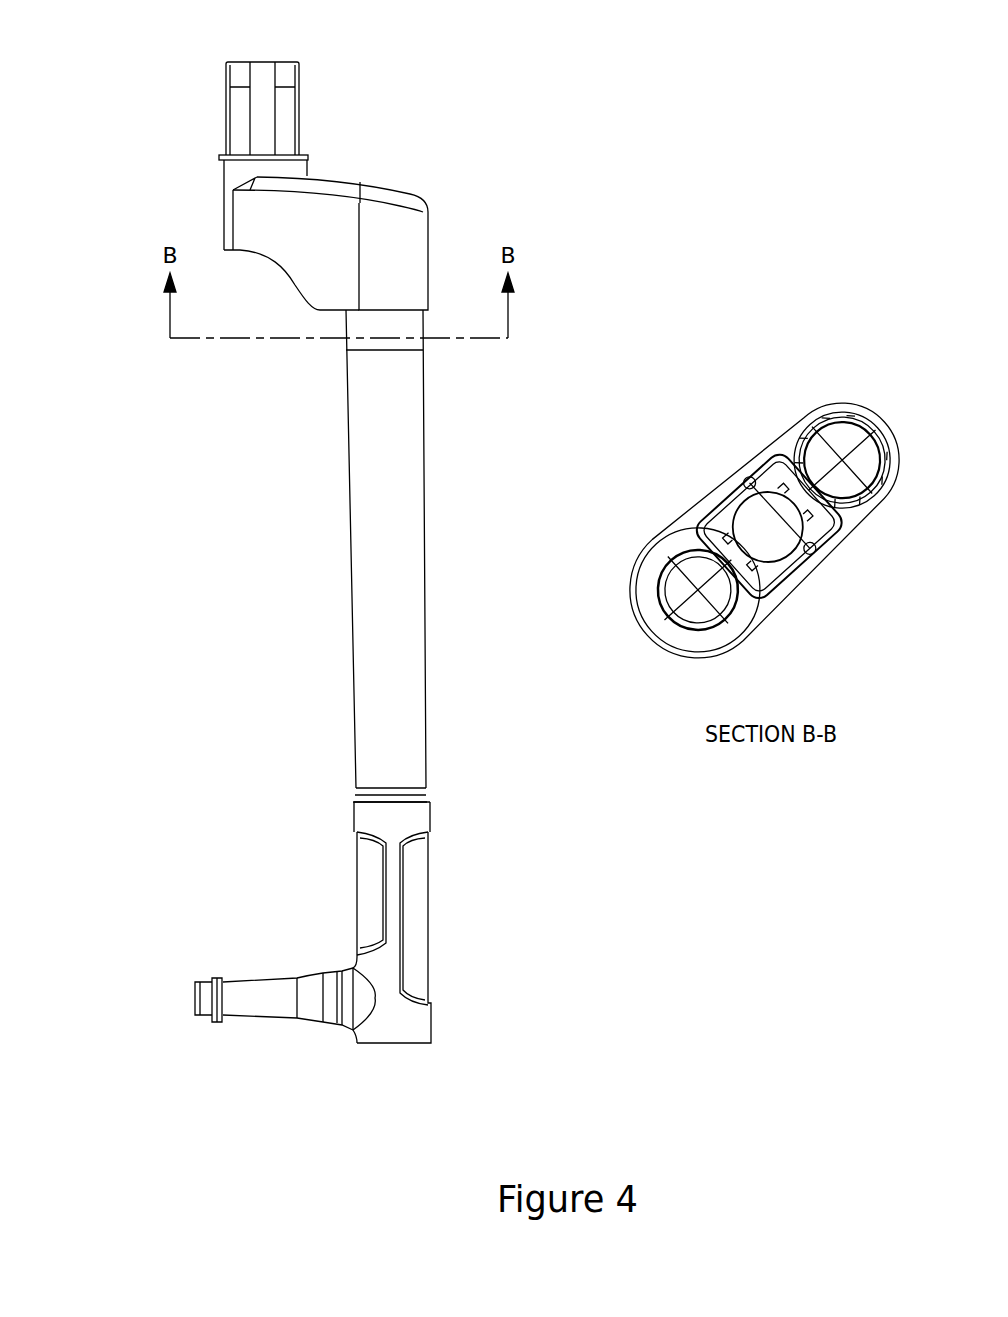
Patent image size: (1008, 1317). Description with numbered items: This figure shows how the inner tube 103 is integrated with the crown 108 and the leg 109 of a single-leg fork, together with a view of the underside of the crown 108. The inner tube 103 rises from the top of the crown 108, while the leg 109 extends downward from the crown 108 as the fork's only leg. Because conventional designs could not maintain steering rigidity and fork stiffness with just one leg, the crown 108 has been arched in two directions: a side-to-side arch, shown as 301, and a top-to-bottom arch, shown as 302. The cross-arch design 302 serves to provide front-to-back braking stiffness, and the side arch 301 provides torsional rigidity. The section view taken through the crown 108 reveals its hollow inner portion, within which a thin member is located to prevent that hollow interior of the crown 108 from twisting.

The inner tube 103 is at (300, 118).
The side-to-side arch 301 is at (380, 184).
The crown 108 is at (432, 256).
The top-to-bottom arch 302 is at (280, 283).
The leg 109 is at (428, 510).